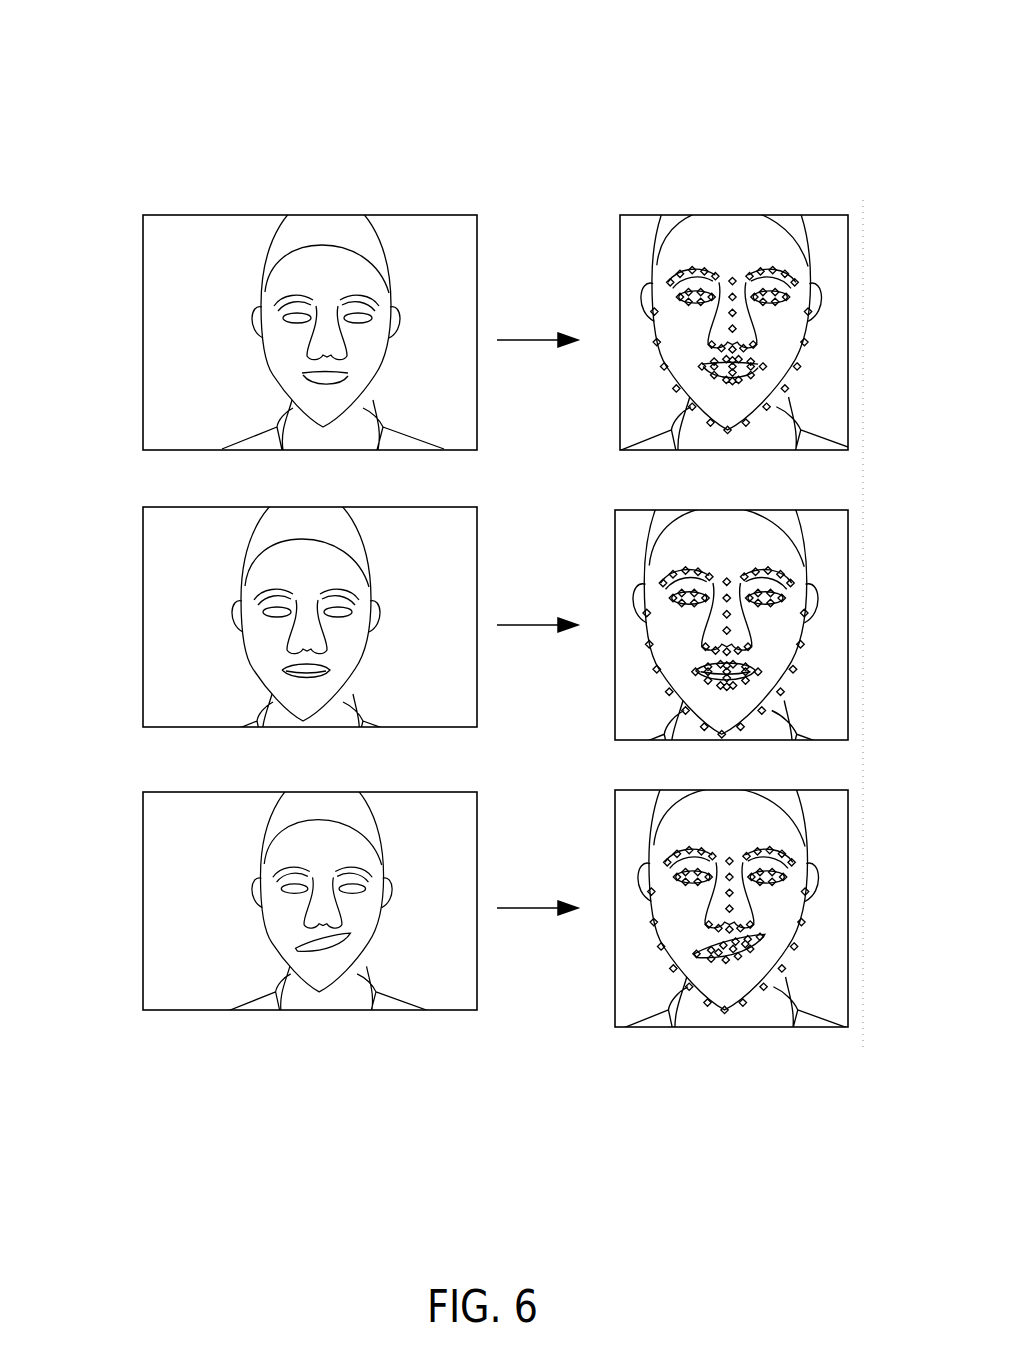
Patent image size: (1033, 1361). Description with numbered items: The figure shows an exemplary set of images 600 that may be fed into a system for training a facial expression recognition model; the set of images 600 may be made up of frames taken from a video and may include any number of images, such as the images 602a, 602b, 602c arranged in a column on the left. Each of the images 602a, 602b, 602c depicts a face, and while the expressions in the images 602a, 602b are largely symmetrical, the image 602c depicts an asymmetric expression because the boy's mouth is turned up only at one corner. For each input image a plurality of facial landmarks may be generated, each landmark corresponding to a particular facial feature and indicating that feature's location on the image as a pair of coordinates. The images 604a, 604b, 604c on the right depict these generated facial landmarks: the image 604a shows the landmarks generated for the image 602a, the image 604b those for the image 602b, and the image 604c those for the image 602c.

The set of images 600 is at (78, 68).
The image 602a is at (127, 283).
The image 602b is at (127, 590).
The image 602c is at (127, 898).
The image 604a is at (870, 275).
The image 604b is at (872, 590).
The image 604c is at (875, 892).